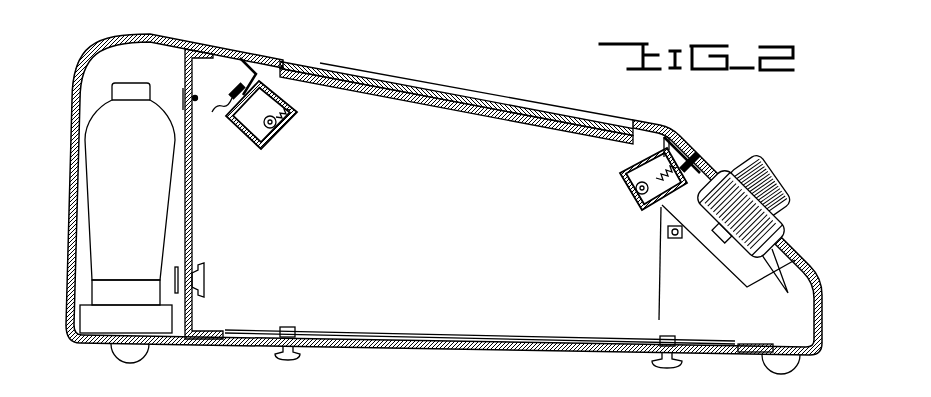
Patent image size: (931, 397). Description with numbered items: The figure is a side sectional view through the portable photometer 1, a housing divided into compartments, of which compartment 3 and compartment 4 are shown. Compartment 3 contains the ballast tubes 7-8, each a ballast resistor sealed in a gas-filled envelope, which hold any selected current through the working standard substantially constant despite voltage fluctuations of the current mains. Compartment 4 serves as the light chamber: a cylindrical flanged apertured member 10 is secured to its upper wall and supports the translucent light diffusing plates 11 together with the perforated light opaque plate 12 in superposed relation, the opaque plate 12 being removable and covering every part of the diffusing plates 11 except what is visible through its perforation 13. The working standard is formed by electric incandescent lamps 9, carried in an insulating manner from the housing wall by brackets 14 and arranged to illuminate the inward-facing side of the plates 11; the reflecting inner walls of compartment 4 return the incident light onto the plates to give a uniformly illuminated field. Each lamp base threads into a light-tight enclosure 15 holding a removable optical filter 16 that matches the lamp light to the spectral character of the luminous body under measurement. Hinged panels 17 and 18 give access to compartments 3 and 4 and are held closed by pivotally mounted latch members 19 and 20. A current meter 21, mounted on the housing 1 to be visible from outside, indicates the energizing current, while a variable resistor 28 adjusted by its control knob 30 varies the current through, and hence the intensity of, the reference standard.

The portable photometer 1 is at (157, 33).
The compartment 3 is at (172, 58).
The compartment 4 is at (473, 312).
The ballast tubes 7-8 is at (127, 93).
The electric incandescent lamps 9 is at (261, 143).
The cylindrical flanged apertured member 10 is at (278, 72).
The translucent light diffusing plates 11 is at (441, 104).
The perforated light opaque plate 12 is at (290, 62).
The perforation 13 is at (386, 76).
The brackets 14 is at (245, 62).
The light-tight enclosure 15 is at (238, 118).
The optical filter 16 is at (281, 134).
The hinged panel 17 is at (192, 250).
The hinged panel 18 is at (339, 347).
The latch member 19 is at (204, 279).
The latch member 20 is at (284, 360).
The current meter 21 is at (742, 283).
The variable resistor 28 is at (702, 207).
The control knob 30 is at (767, 171).